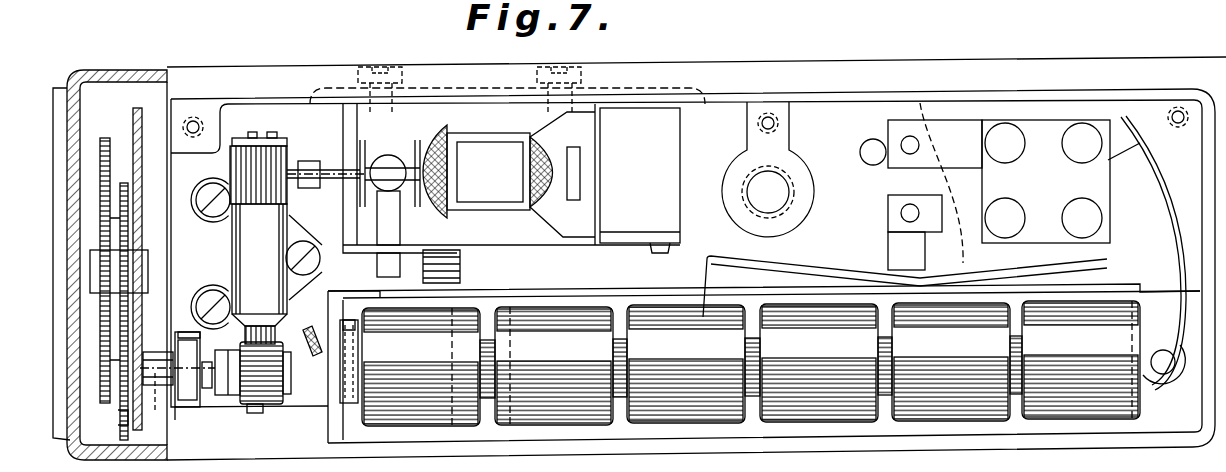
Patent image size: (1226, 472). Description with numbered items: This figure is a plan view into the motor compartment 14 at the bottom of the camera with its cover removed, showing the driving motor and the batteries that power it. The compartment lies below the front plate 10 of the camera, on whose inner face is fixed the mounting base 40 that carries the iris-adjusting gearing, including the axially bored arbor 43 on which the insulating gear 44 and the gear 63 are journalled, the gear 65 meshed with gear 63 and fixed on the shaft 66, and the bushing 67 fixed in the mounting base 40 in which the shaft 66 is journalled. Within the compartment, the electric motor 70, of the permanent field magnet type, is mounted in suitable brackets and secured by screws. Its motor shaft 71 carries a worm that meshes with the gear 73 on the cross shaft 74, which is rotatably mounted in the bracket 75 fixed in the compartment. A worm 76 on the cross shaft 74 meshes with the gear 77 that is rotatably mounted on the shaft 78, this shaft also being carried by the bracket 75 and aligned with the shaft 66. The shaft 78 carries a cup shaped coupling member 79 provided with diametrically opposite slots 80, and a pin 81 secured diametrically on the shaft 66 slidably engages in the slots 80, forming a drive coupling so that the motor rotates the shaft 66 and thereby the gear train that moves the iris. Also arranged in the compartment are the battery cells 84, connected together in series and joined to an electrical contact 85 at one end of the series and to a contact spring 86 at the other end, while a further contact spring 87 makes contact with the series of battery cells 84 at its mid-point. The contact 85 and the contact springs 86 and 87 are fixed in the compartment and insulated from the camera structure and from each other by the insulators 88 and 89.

The front plate 10 is at (122, 74).
The motor compartment 14 is at (817, 120).
The mounting base 40 is at (133, 110).
The arbor 43 is at (148, 257).
The gear 44 is at (101, 140).
The gear 63 is at (123, 183).
The gear 65 is at (125, 418).
The shaft 66 is at (155, 414).
The bushing 67 is at (152, 352).
The electric motor 70 is at (427, 131).
The motor shaft 71 is at (310, 170).
The gear 73 is at (246, 134).
The cross shaft 74 is at (240, 262).
The bracket 75 is at (281, 126).
The worm 76 is at (287, 402).
The gear 77 is at (240, 406).
The shaft 78 is at (224, 405).
The cup shaped coupling member 79 is at (187, 334).
The slots 80 is at (192, 372).
The pin 81 is at (176, 420).
The battery cells 84 is at (440, 374).
The electrical contact 85 is at (352, 372).
The contact spring 86 is at (1182, 312).
The contact spring 87 is at (775, 268).
The insulator 88 is at (350, 320).
The insulator 89 is at (1098, 183).